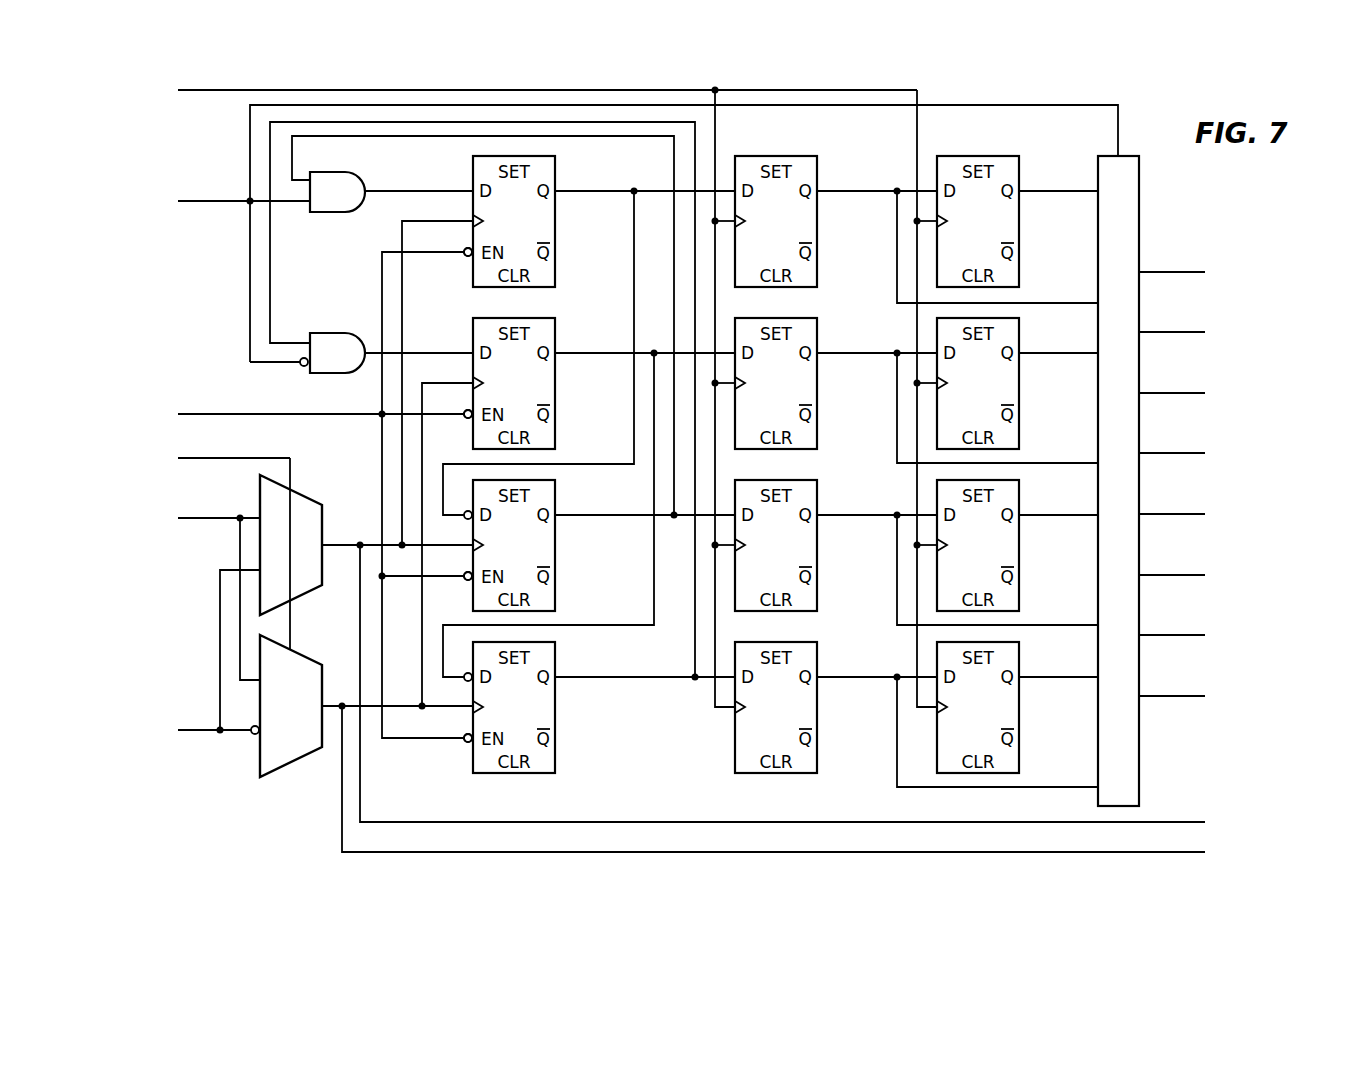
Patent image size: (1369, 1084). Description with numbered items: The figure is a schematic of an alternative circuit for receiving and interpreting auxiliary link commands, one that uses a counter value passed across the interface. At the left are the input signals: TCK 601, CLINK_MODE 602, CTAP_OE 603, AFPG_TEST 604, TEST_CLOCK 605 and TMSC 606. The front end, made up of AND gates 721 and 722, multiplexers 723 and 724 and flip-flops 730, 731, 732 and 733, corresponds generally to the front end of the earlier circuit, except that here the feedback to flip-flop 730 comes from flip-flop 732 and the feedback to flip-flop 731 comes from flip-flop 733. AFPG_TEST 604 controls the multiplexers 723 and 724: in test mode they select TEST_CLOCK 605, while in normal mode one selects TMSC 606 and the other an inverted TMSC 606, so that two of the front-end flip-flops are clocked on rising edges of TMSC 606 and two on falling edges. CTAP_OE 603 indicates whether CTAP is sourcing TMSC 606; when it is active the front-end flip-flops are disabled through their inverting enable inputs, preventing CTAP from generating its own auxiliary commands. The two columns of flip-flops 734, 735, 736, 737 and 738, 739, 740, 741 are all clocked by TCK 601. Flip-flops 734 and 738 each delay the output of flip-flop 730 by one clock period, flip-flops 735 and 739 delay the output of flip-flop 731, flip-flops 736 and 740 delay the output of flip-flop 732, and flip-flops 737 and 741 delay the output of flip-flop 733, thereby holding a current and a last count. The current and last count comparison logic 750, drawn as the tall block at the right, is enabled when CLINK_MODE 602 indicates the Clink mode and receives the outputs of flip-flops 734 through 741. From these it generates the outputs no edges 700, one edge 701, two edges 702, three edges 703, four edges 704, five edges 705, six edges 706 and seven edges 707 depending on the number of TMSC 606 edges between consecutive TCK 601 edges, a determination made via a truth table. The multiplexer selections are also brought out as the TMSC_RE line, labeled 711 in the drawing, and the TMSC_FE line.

The TCK 601 is at (213, 92).
The CLINK_MODE 602 is at (213, 203).
The CTAP_OE 603 is at (224, 413).
The AFPG_TEST 604 is at (213, 462).
The TEST_CLOCK 605 is at (203, 522).
The TMSC 606 is at (197, 735).
The AND gate 721 is at (335, 213).
The AND gate 722 is at (339, 331).
The multiplexer 723 is at (306, 497).
The multiplexer 724 is at (293, 767).
The flip-flop 730 is at (555, 228).
The flip-flop 731 is at (555, 390).
The flip-flop 732 is at (555, 551).
The flip-flop 733 is at (555, 713).
The flip-flop 734 is at (818, 228).
The flip-flop 735 is at (818, 390).
The flip-flop 736 is at (818, 551).
The flip-flop 737 is at (818, 713).
The flip-flop 738 is at (1020, 228).
The flip-flop 739 is at (1020, 390).
The flip-flop 740 is at (1020, 551).
The flip-flop 741 is at (1020, 713).
The current and last count comparison logic 750 is at (1140, 200).
The no edges output 700 is at (1165, 270).
The one edge output 701 is at (1165, 330).
The two edges output 702 is at (1165, 391).
The three edges output 703 is at (1165, 451).
The four edges output 704 is at (1163, 516).
The five edges output 705 is at (1163, 577).
The six edges output 706 is at (1163, 637).
The seven edges output 707 is at (1163, 698).
The TMSC_RE output 711 is at (1163, 820).